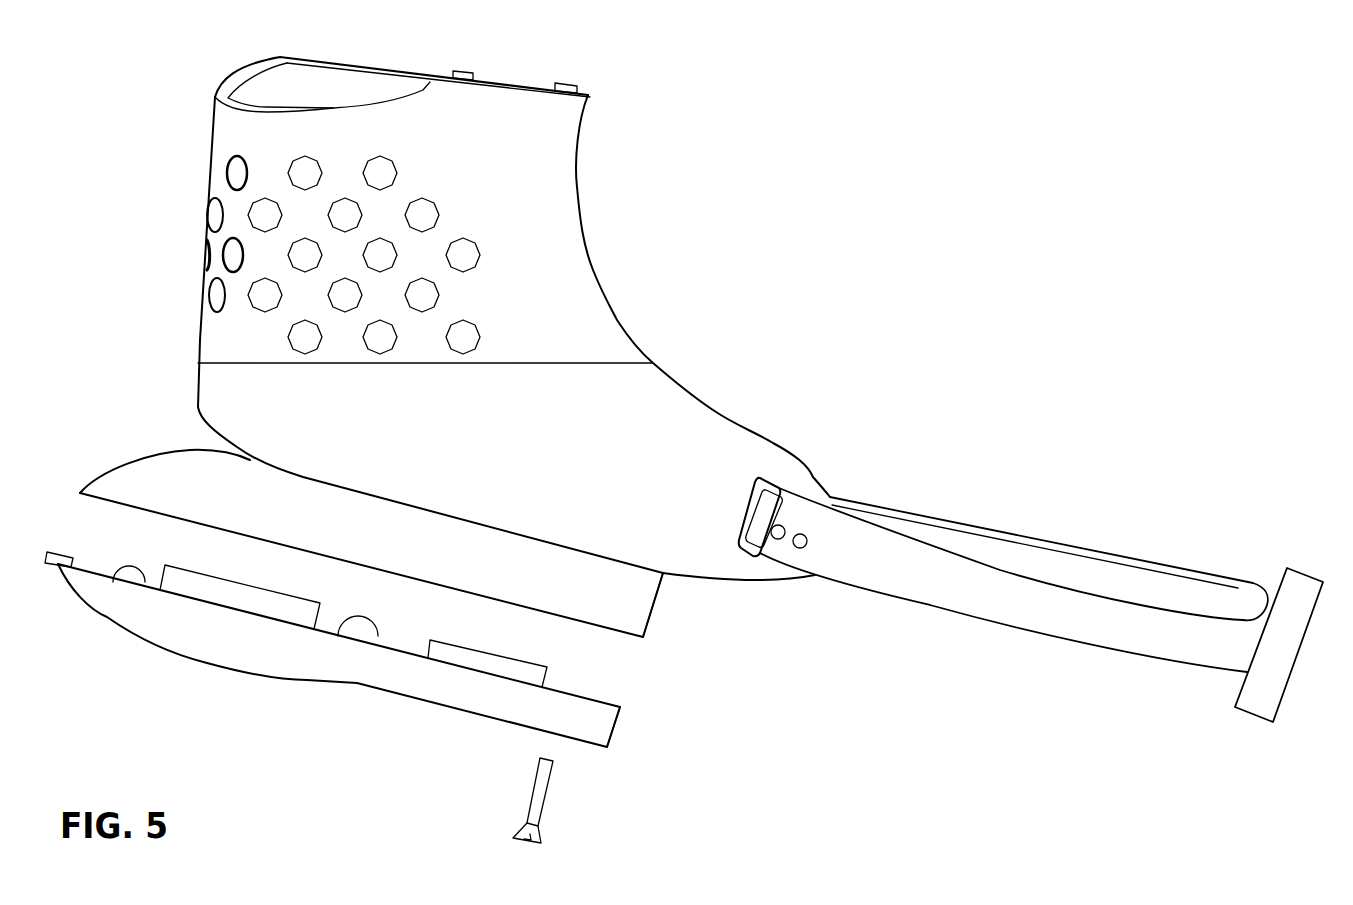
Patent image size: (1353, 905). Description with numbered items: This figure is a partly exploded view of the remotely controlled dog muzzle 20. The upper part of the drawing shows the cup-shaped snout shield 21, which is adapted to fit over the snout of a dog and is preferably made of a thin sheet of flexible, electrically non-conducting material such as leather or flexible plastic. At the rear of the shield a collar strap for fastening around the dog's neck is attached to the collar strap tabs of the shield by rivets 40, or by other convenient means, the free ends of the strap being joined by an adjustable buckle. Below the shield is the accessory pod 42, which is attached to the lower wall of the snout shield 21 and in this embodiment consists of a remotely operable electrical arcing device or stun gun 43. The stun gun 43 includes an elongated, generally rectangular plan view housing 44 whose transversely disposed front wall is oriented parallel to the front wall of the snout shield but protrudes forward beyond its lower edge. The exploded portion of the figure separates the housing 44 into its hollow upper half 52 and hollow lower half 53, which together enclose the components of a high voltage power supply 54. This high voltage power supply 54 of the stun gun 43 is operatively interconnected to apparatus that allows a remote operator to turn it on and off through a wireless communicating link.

The muzzle 20 is at (780, 92).
The snout shield 21 is at (588, 92).
The rivets 40 is at (800, 548).
The accessory pod 42 is at (330, 792).
The stun gun 43 is at (467, 712).
The housing 44 is at (622, 633).
The upper half 52 is at (163, 517).
The lower half 53 is at (337, 687).
The high voltage power supply 54 is at (322, 588).